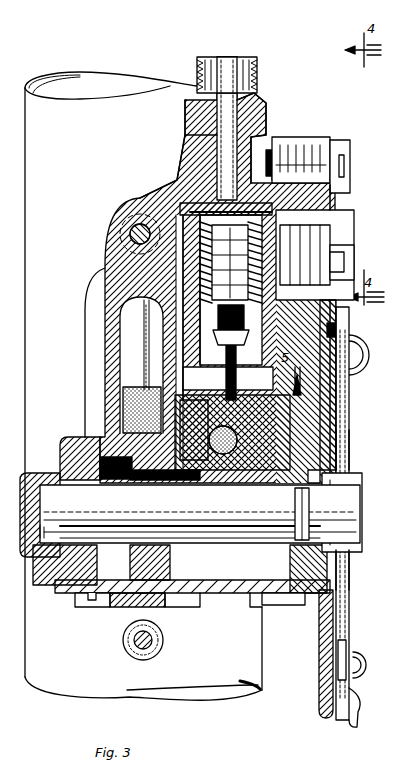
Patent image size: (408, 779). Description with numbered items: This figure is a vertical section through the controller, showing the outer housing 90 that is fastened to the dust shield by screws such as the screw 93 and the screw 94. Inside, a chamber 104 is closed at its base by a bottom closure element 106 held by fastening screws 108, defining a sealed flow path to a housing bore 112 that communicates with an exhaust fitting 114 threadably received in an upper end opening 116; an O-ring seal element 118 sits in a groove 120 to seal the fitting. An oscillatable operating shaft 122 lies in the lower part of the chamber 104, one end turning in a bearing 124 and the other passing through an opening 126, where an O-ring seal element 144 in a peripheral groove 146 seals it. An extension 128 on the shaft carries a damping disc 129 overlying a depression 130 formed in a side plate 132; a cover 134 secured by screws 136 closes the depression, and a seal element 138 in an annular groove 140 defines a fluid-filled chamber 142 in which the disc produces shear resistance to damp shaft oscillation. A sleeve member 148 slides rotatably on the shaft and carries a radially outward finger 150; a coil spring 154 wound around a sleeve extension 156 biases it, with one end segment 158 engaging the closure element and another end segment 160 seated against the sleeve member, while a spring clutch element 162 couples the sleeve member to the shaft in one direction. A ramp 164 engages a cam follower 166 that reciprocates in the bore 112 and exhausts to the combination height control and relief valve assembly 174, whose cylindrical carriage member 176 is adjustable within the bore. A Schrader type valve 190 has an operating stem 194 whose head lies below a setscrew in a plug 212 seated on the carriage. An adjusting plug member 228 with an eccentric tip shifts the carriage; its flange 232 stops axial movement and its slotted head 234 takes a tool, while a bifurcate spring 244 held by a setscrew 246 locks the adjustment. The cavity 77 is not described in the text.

The exhaust fitting 114 is at (249, 62).
The O-ring seal element 118 is at (259, 128).
The upper end opening 116 is at (262, 160).
The groove 120 is at (193, 142).
The outer housing 90 is at (175, 192).
The screw 93 is at (136, 230).
The bifurcate spring 244 is at (345, 190).
The setscrew 246 is at (337, 147).
The adjusting plug member 228 is at (340, 241).
The flange 232 is at (345, 255).
The slotted head 234 is at (348, 272).
The plug 212 is at (213, 237).
The operating stem 194 is at (229, 262).
The Schrader type valve 190 is at (180, 320).
The cavity 77 is at (133, 308).
The combination height control and relief valve assembly 174 is at (178, 323).
The finger 150 is at (123, 397).
The cylindrical carriage member 176 is at (276, 322).
The seal element 138 is at (346, 333).
The annular groove 140 is at (352, 372).
The damping disc 129 is at (345, 612).
The housing bore 112 is at (343, 422).
The extension 128 is at (346, 467).
The cam follower 166 is at (197, 416).
The bearing 124 is at (55, 488).
The operating shaft 122 is at (53, 527).
The chamber 142 is at (360, 483).
The chamber 104 is at (200, 514).
The ramp 164 is at (200, 472).
The end segment 160 is at (248, 486).
The peripheral groove 146 is at (302, 492).
The O-ring seal element 144 is at (314, 483).
The opening 126 is at (345, 560).
The coil spring 154 is at (242, 584).
The spring clutch element 162 is at (76, 607).
The fastening screw 108 is at (100, 603).
The sleeve member 148 is at (175, 582).
The bottom closure element 106 is at (198, 582).
The screw 94 is at (135, 650).
The end segment 158 is at (261, 600).
The sleeve extension 156 is at (283, 605).
The cover 134 is at (345, 640).
The depression 130 is at (334, 658).
The side plate 132 is at (329, 708).
The screw 136 is at (356, 718).